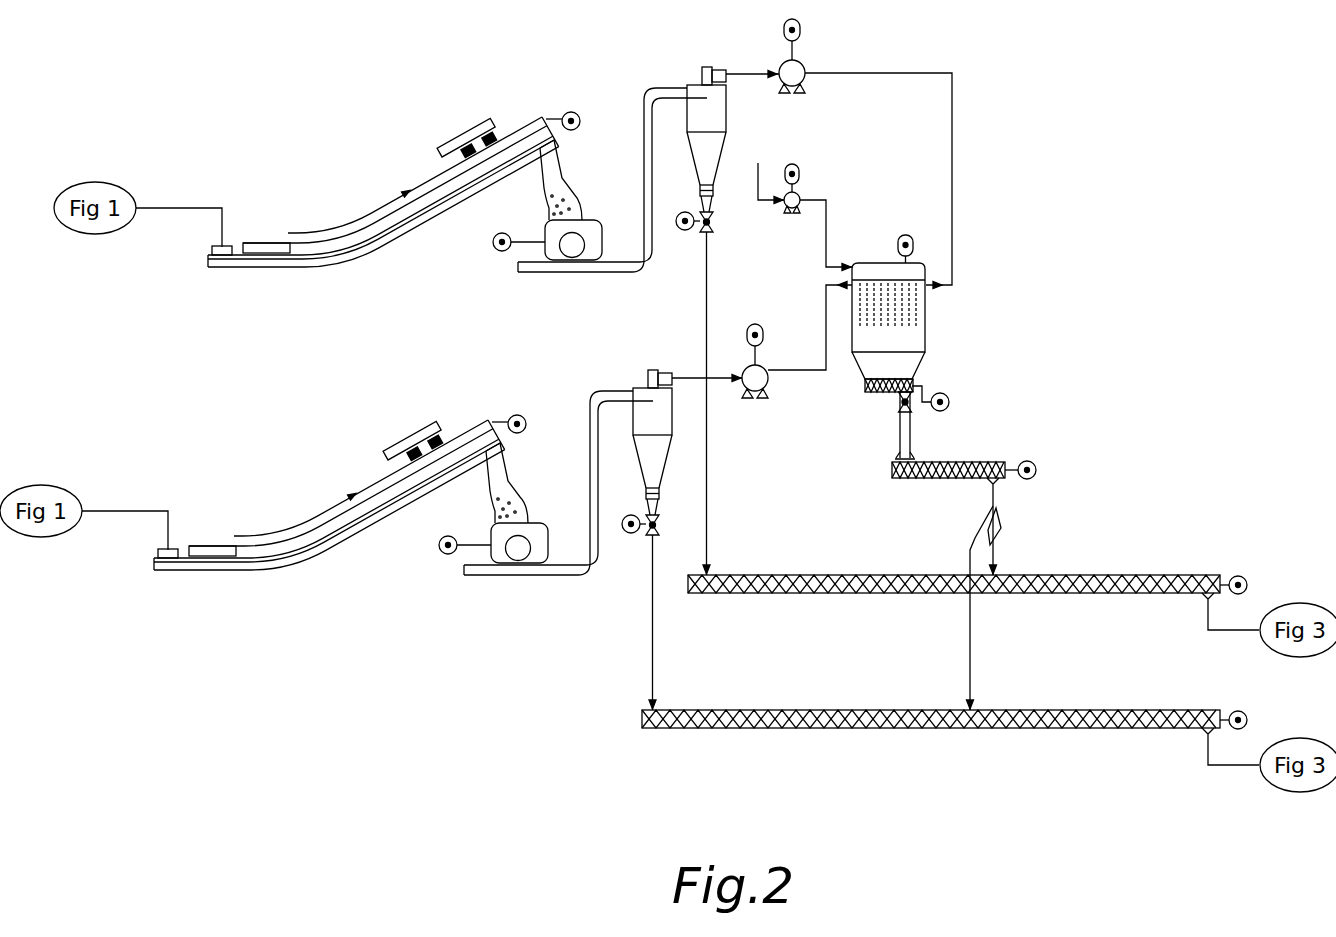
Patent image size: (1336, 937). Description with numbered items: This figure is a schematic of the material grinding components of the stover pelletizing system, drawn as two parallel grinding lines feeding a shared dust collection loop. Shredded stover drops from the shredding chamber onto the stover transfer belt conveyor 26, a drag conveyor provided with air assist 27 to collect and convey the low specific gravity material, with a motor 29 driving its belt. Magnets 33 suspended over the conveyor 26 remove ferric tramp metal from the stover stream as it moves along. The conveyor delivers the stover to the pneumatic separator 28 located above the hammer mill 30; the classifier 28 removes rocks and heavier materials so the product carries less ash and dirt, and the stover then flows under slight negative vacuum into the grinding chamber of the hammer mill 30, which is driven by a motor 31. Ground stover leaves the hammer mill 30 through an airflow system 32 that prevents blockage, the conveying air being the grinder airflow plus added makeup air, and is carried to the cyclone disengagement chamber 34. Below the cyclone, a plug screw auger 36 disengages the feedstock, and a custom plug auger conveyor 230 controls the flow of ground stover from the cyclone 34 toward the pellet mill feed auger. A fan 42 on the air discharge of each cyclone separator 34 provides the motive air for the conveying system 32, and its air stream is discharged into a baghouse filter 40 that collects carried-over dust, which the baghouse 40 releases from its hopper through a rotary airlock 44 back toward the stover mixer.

The stover transfer belt conveyor 26 is at (425, 224).
The air assist 27 is at (289, 241).
The pneumatic separator 28 is at (563, 166).
The motor 29 is at (566, 112).
The hammer mill 30 is at (548, 222).
The motor 31 is at (500, 253).
The airflow system 32 is at (576, 274).
The magnets 33 is at (466, 131).
The cyclone disengagement chamber 34 is at (691, 84).
The plug screw auger 36 is at (713, 205).
The baghouse filter 40 is at (926, 302).
The fan 42 is at (806, 61).
The rotary airlock 44 is at (900, 401).
The plug auger conveyor 230 is at (833, 575).